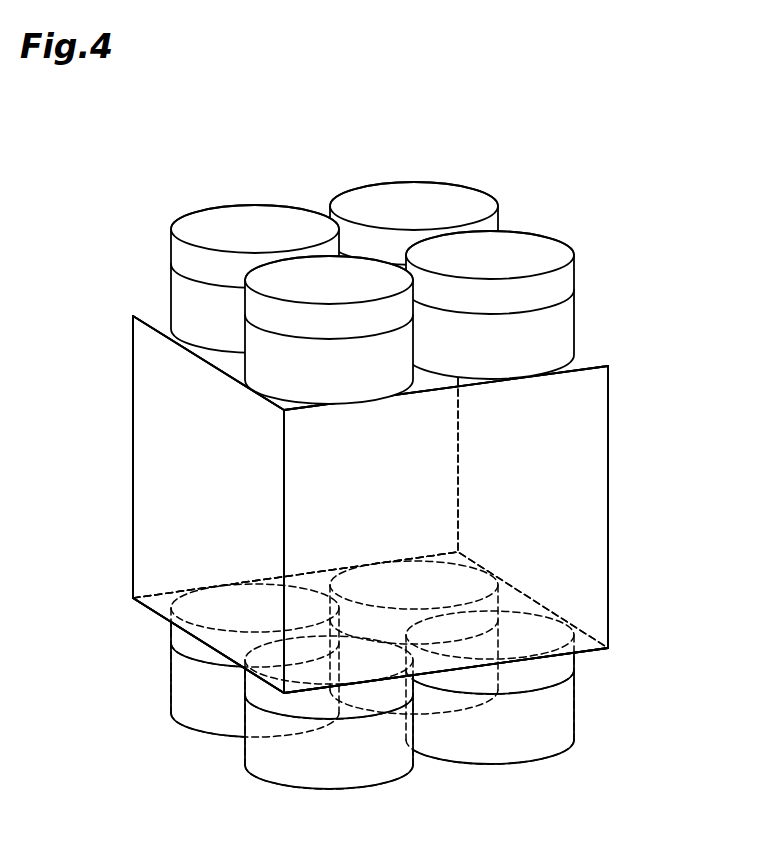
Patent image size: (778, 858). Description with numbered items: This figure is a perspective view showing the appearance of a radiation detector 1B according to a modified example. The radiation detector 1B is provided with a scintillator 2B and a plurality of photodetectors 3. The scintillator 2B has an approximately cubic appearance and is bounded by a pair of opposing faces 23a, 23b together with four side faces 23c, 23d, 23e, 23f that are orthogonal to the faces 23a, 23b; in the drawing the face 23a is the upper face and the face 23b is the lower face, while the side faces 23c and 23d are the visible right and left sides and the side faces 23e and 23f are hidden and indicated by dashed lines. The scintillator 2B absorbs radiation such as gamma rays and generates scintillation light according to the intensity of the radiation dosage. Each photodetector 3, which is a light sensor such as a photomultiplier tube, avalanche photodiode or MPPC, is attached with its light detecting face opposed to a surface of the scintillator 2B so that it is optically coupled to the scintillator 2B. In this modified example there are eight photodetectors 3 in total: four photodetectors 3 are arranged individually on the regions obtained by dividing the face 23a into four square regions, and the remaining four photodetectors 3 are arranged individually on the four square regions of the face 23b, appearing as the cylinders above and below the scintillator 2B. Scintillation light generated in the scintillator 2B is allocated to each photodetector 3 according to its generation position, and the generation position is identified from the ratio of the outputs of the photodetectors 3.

The radiation detector 1B is at (587, 161).
The scintillator 2B is at (617, 414).
The photodetector 3 is at (370, 260).
The face 23a is at (583, 361).
The face 23b is at (594, 655).
The side face 23c is at (570, 463).
The side face 23d is at (163, 528).
The side face 23e is at (173, 453).
The side face 23f is at (567, 536).